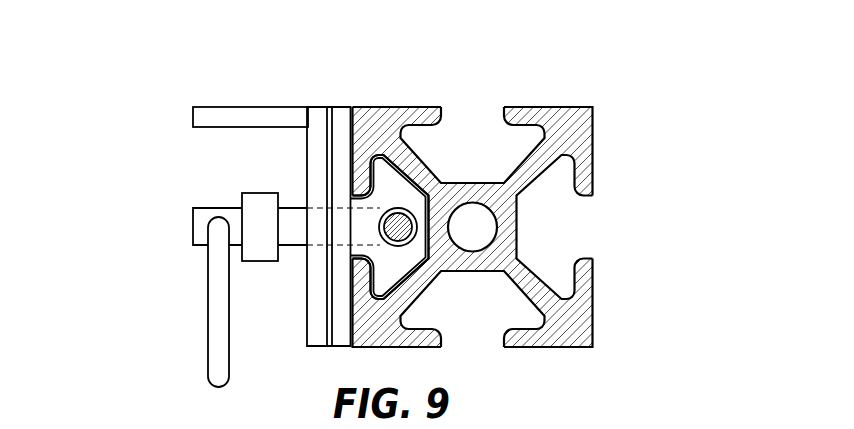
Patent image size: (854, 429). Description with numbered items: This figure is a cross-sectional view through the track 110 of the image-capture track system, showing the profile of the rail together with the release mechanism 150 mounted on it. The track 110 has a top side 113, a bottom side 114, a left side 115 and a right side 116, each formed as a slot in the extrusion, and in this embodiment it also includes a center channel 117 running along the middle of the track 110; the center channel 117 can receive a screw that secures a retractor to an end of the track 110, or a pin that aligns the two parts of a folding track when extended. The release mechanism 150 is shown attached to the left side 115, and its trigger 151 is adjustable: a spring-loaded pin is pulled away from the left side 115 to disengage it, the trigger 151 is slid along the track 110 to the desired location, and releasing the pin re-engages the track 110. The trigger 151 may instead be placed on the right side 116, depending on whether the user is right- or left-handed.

The track 110 is at (373, 128).
The top side 113 is at (518, 107).
The bottom side 114 is at (507, 346).
The left side 115 is at (354, 150).
The right side 116 is at (593, 160).
The center channel 117 is at (483, 230).
The release mechanism 150 is at (252, 210).
The trigger 151 is at (215, 277).